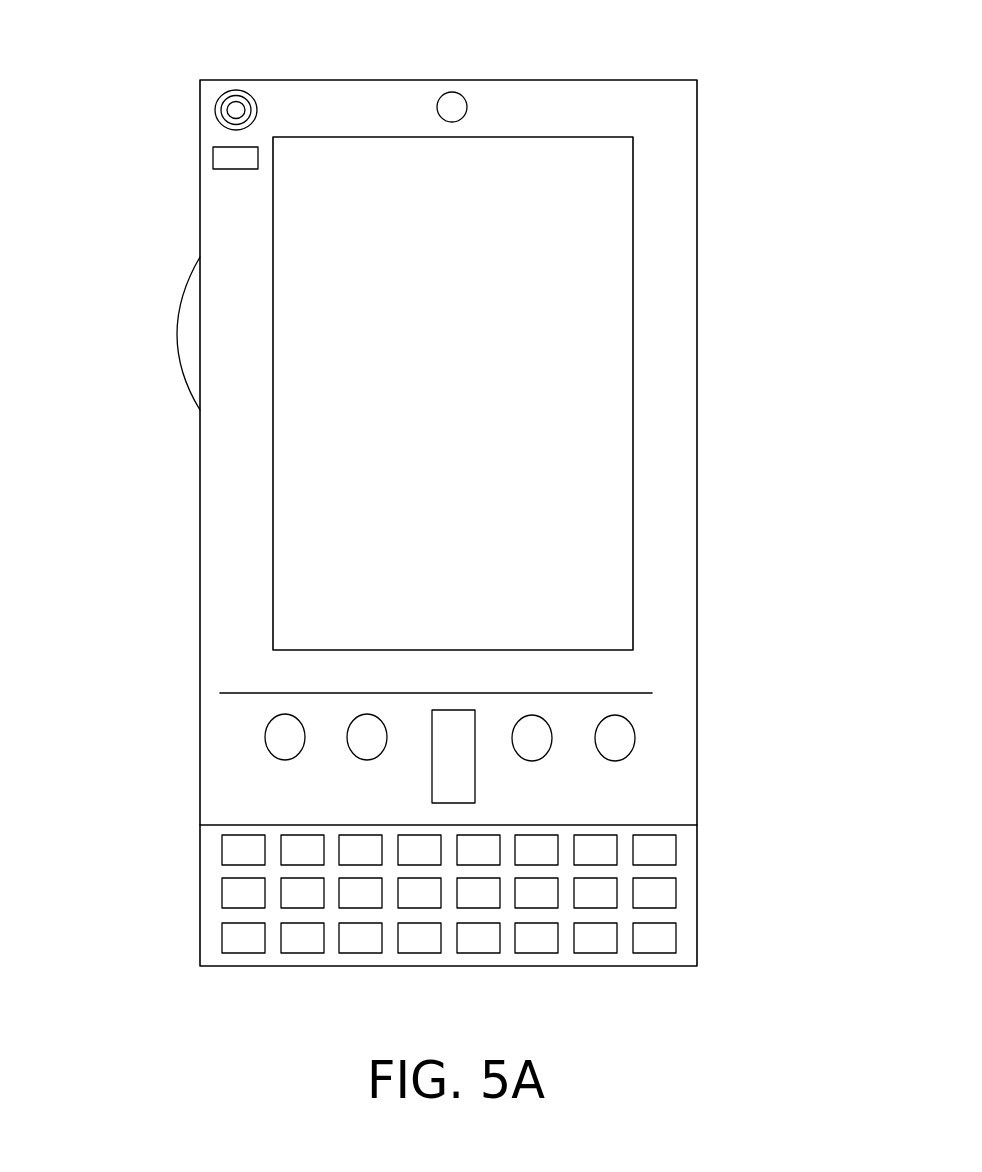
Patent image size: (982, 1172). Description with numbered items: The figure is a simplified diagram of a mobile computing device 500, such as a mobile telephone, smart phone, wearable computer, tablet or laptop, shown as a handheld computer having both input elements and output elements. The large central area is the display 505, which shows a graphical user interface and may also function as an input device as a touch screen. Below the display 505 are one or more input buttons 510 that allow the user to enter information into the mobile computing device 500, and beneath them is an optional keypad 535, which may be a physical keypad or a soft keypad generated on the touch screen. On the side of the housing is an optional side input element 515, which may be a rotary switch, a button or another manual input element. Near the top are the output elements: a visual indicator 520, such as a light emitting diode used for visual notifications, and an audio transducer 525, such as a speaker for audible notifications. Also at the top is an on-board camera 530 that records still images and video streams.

The mobile computing device 500 is at (685, 100).
The display 505 is at (385, 561).
The input buttons 510 is at (452, 763).
The side input element 515 is at (190, 331).
The visual indicator 520 is at (213, 162).
The audio transducer 525 is at (215, 110).
The on-board camera 530 is at (463, 105).
The keypad 535 is at (208, 942).